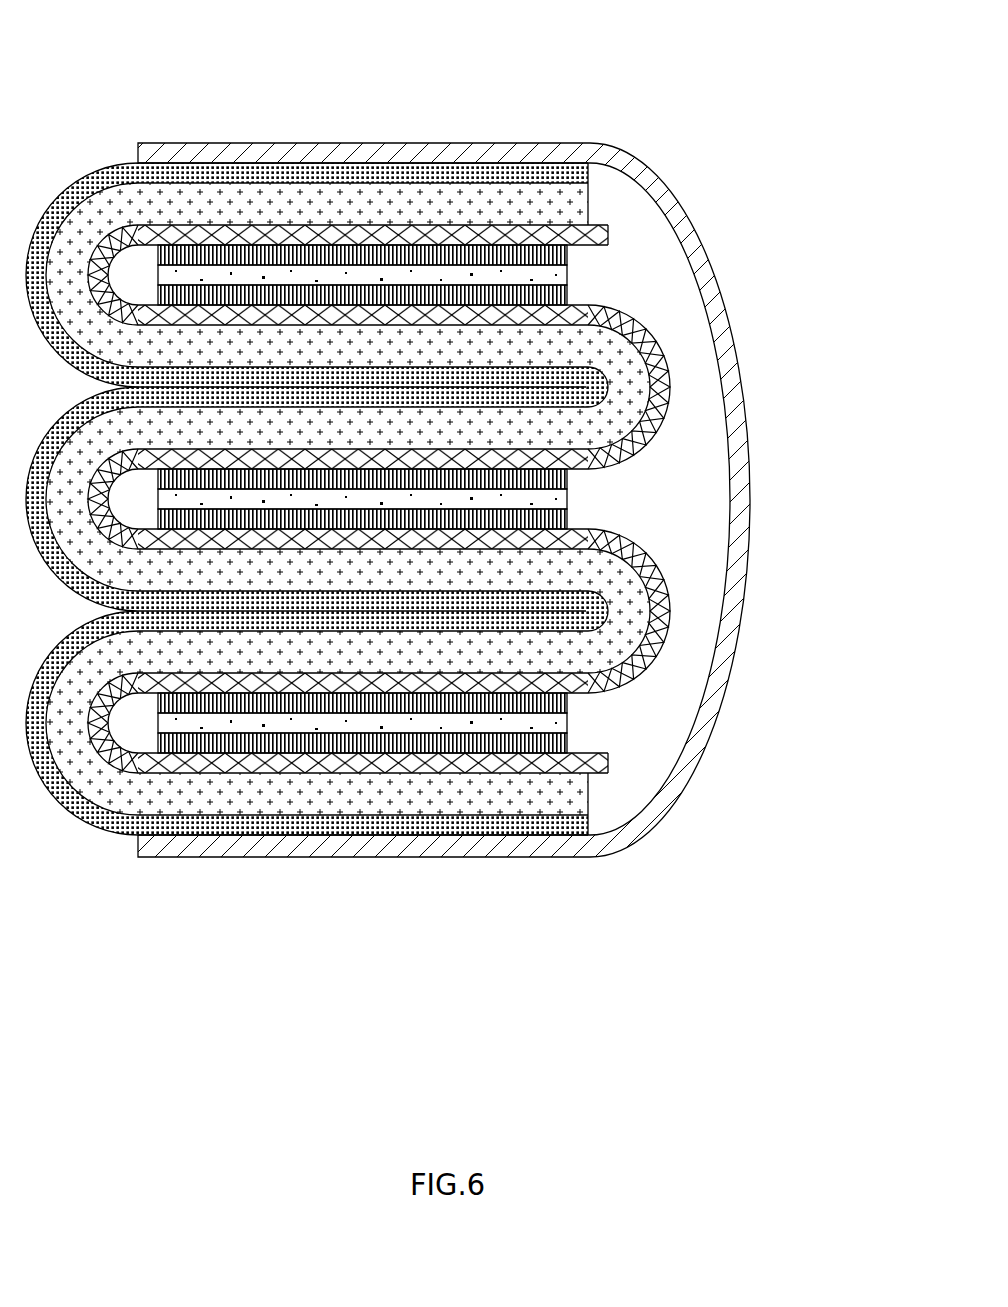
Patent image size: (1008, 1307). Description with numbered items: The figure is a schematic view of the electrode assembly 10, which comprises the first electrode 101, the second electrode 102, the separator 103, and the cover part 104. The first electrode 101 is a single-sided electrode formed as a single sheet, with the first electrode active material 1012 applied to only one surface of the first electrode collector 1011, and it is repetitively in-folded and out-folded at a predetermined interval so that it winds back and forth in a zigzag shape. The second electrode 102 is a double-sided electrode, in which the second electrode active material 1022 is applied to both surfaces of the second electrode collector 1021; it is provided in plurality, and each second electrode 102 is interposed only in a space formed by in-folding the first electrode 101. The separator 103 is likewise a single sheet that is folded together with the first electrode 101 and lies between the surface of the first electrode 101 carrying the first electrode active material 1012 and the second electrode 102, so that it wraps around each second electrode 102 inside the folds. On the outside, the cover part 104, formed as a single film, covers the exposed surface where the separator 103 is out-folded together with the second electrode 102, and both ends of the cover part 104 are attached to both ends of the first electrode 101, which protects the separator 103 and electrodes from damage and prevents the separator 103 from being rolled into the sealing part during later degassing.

The electrode assembly 10 is at (622, 94).
The first electrode 101 is at (414, 511).
The first electrode collector 1011 is at (588, 825).
The first electrode active material 1012 is at (588, 793).
The second electrode 102 is at (527, 499).
The second electrode collector 1021 is at (567, 500).
The second electrode active material 1022 is at (567, 480).
The separator 103 is at (608, 763).
The cover part 104 is at (715, 276).